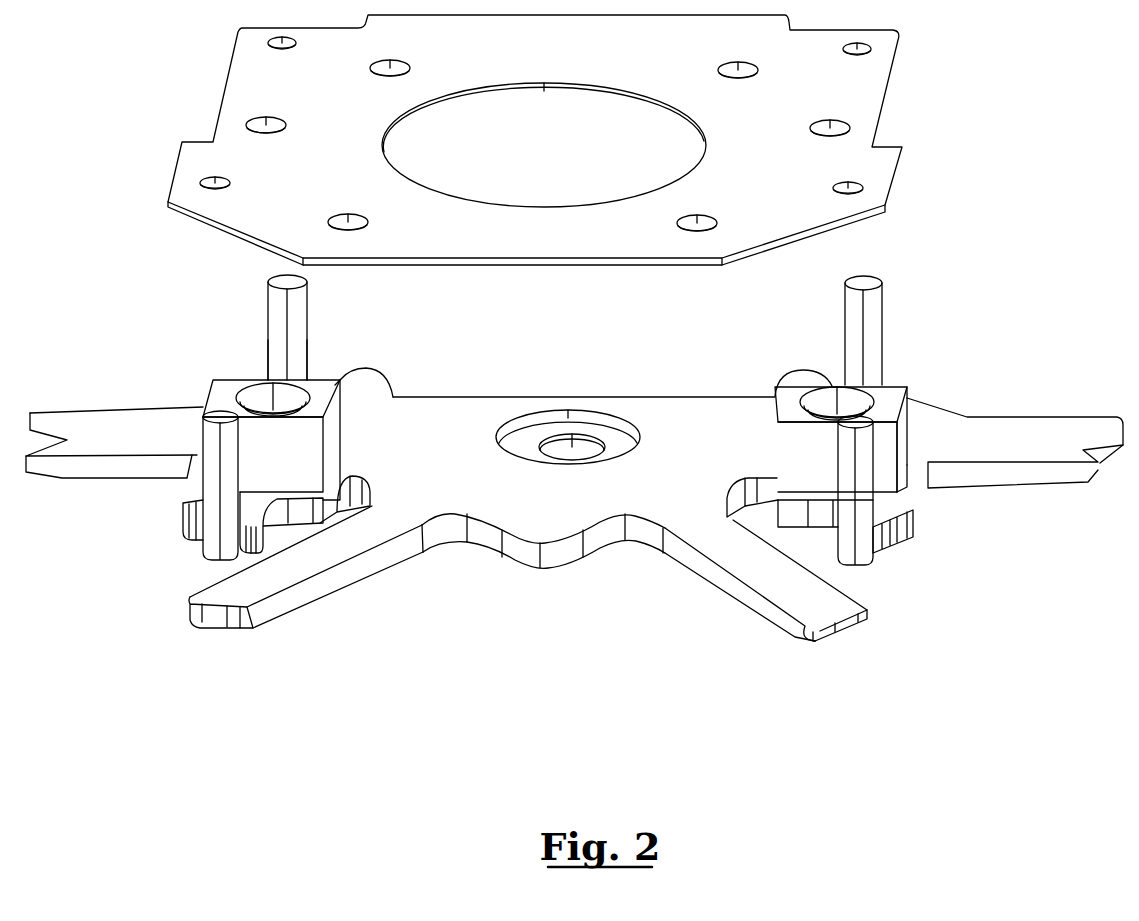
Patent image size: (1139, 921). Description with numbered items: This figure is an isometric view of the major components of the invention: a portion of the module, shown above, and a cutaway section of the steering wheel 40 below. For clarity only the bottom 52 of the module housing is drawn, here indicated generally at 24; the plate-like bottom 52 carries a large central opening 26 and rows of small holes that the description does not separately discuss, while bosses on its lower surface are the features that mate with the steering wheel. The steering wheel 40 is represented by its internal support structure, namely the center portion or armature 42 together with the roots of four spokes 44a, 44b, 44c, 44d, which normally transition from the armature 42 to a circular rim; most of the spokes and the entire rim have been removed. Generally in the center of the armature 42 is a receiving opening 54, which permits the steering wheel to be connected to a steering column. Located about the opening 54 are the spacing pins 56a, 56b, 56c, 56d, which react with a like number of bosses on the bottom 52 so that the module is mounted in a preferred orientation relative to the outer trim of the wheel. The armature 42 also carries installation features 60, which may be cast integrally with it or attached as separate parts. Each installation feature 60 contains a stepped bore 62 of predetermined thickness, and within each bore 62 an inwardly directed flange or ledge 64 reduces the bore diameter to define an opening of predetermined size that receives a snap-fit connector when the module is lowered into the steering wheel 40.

The mounting plate 24 is at (906, 59).
The central aperture 26 is at (573, 92).
The bottom of the housing 52 is at (855, 98).
The steering wheel 40 is at (731, 600).
The armature 42 is at (458, 422).
The receiving opening 54 is at (583, 442).
The spoke 44a is at (267, 607).
The spoke 44b is at (105, 467).
The spoke 44c is at (788, 621).
The spoke 44d is at (1033, 430).
The installation feature 60 is at (525, 420).
The stepped bore 62 is at (262, 388).
The flange 64 is at (283, 352).
The spacing pin 56a is at (215, 462).
The spacing pin 56b is at (277, 310).
The spacing pin 56c is at (863, 503).
The spacing pin 56d is at (867, 315).